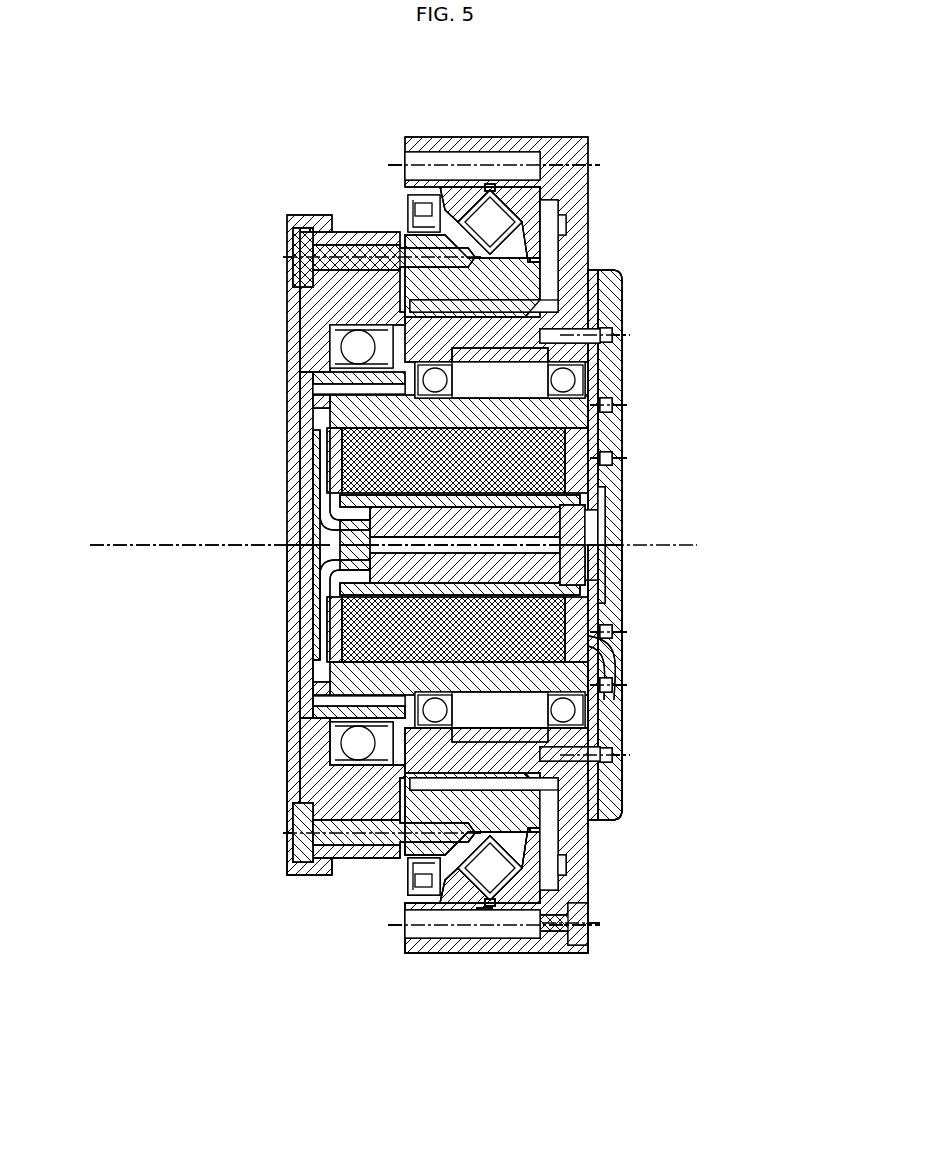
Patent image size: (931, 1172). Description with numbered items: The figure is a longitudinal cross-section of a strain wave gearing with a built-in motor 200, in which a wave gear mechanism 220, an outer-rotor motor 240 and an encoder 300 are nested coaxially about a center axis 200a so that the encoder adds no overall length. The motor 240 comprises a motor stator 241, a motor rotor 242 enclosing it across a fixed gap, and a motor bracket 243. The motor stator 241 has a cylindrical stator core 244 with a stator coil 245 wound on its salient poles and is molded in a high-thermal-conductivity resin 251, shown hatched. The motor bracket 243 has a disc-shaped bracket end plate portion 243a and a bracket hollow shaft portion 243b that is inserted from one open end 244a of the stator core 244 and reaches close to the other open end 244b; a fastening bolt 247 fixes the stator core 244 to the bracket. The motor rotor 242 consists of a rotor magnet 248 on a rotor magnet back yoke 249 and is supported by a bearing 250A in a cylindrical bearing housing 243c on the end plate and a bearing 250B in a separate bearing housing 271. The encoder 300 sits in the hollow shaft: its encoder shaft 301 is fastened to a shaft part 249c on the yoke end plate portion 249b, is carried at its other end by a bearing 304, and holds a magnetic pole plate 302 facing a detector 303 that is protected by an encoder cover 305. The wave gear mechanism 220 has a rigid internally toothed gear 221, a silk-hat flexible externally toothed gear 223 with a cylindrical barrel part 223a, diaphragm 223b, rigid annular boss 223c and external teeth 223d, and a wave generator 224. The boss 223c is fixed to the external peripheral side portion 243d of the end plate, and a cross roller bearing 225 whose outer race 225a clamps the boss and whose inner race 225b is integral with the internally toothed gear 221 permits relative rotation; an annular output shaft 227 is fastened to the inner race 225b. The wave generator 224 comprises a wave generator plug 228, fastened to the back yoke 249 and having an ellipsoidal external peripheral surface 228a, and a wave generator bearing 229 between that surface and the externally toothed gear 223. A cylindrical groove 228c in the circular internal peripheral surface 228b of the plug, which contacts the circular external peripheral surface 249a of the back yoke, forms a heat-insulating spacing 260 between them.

The strain wave gearing with a built-in motor 200 is at (250, 183).
The center axis 200a is at (118, 542).
The wave gear mechanism 220 is at (317, 325).
The rigid internally toothed gear 221 is at (318, 797).
The flexible externally toothed gear 223 is at (203, 902).
The cylindrical barrel part 223a is at (445, 815).
The diaphragm 223b is at (545, 805).
The rigid annular boss 223c is at (493, 912).
The external teeth 223d is at (323, 850).
The wave generator 224 is at (140, 665).
The cross roller bearing 225 is at (733, 140).
The outer race 225a is at (555, 182).
The inner race 225b is at (548, 243).
The annular output shaft 227 is at (285, 296).
The wave generator plug 228 is at (320, 703).
The ellipsoidal external peripheral surface 228a is at (340, 733).
The circular internal peripheral surface 228b is at (317, 372).
The cylindrical groove 228c is at (320, 385).
The wave generator bearing 229 is at (333, 750).
The motor 240 is at (300, 502).
The motor stator 241 is at (740, 478).
The motor rotor 242 is at (740, 372).
The motor bracket 243 is at (762, 792).
The bracket end plate portion 243a is at (590, 775).
The bracket hollow shaft portion 243b is at (612, 640).
The cylindrical bearing housing 243c is at (565, 735).
The external peripheral side portion 243d is at (577, 893).
The stator core 244 is at (590, 492).
The open end 244a is at (588, 518).
The open end 244b is at (320, 573).
The stator coil 245 is at (600, 452).
The fastening bolt 247 is at (308, 535).
The rotor magnet 248 is at (600, 408).
The rotor magnet back yoke 249 is at (593, 390).
The circular external peripheral surface 249a is at (303, 415).
The yoke end plate portion 249b is at (320, 628).
The shaft part 249c is at (320, 566).
The bearing 250A is at (462, 367).
The bearing 250B is at (565, 300).
The high-thermal-conductivity resin 251 is at (318, 487).
The spacing 260 is at (317, 435).
The bearing housing 271 is at (553, 270).
The encoder 300 is at (623, 557).
The encoder shaft 301 is at (598, 588).
The magnetic pole plate 302 is at (598, 540).
The detector 303 is at (605, 551).
The bearing 304 is at (615, 573).
The encoder cover 305 is at (624, 602).